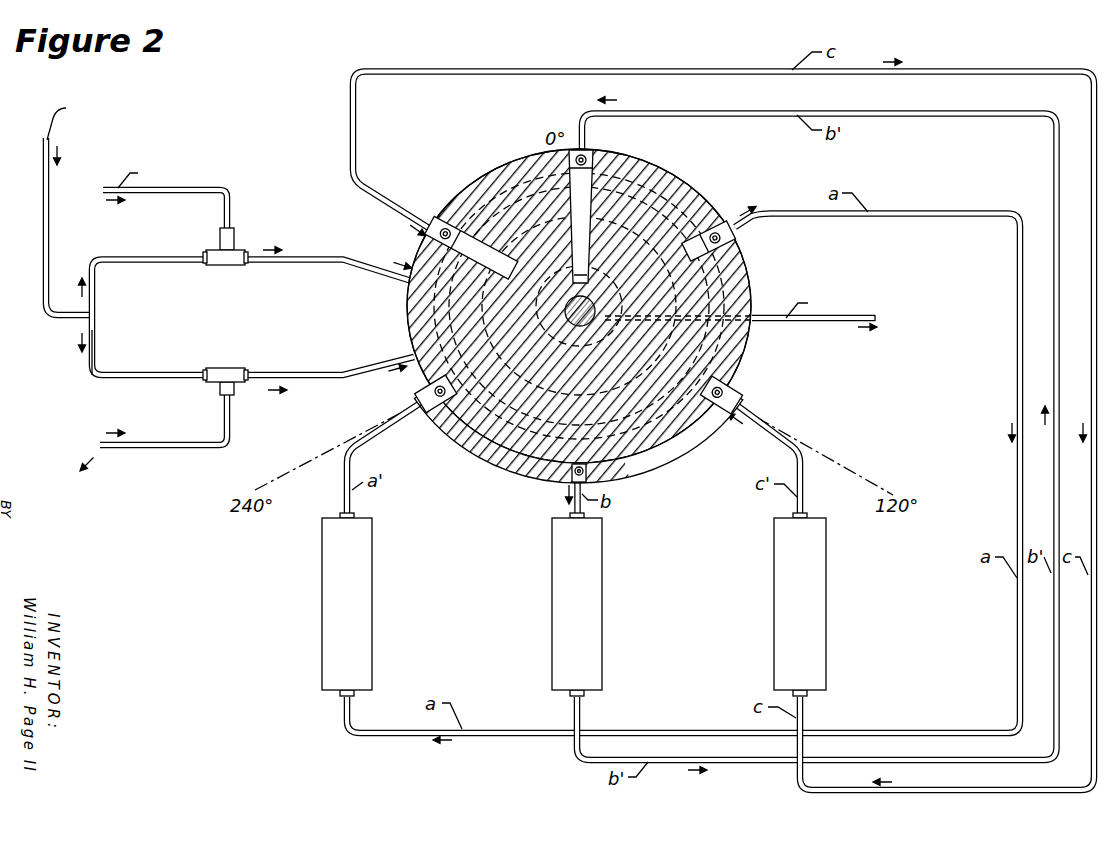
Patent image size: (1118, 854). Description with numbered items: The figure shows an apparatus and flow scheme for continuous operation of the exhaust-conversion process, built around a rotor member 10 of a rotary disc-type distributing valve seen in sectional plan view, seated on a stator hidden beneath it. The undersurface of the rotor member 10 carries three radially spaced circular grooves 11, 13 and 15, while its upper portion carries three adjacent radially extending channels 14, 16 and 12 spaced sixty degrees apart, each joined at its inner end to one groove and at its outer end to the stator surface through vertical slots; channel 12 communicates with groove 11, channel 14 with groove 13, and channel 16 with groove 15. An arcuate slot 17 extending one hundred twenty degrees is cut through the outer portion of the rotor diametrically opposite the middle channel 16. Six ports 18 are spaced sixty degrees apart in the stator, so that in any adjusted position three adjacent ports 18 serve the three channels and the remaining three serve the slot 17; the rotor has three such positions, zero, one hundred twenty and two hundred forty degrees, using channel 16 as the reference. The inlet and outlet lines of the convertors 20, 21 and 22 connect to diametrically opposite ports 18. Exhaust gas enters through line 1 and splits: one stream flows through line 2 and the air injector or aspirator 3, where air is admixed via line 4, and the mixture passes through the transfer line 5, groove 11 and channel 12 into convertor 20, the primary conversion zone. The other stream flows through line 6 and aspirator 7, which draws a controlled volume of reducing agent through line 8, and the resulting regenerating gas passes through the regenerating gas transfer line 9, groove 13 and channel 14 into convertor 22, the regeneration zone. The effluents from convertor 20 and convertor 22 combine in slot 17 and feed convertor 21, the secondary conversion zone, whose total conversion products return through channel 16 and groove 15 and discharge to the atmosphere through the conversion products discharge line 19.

The exhaust gas line 1 is at (42, 193).
The line 2 is at (118, 262).
The air injector or aspirator 3 is at (238, 245).
The air line 4 is at (170, 192).
The air-exhaust gas conducting transfer line 5 is at (360, 268).
The line 6 is at (120, 373).
The aspirator 7 is at (235, 398).
The reducing agent line 8 is at (165, 444).
The regenerating gas transfer line 9 is at (360, 370).
The rotor member 10 is at (574, 312).
The circular groove 11 is at (528, 200).
The radially extending channel 12 is at (706, 263).
The circular groove 13 is at (620, 252).
The radially extending channel 14 is at (490, 250).
The circular groove 15 is at (578, 352).
The radially extending channel 16 is at (590, 190).
The arcuate slot 17 is at (516, 458).
The ports 18 is at (590, 156).
The conversion products discharge line 19 is at (790, 322).
The convertor 20 is at (322, 600).
The convertor 21 is at (552, 602).
The convertor 22 is at (774, 605).